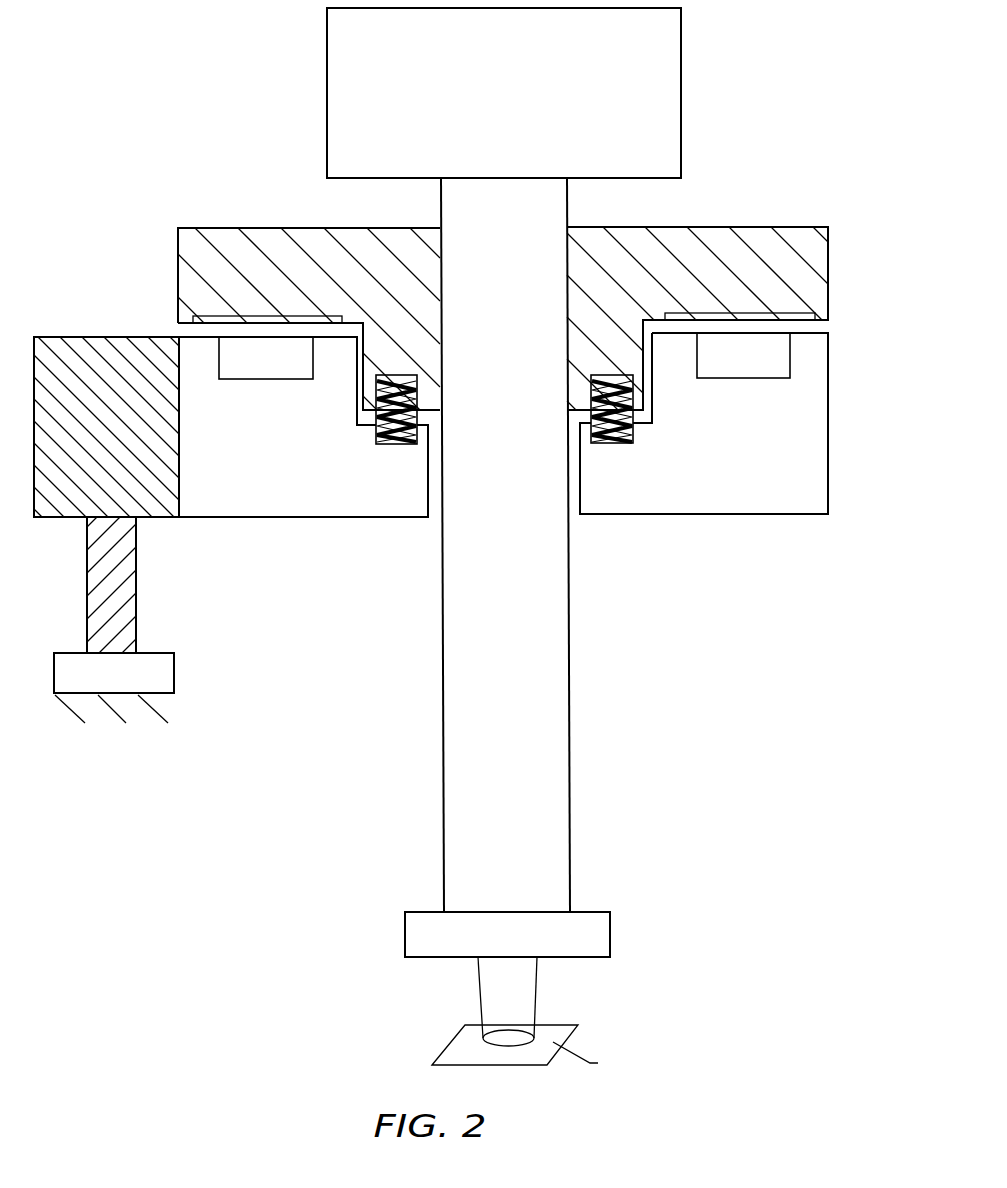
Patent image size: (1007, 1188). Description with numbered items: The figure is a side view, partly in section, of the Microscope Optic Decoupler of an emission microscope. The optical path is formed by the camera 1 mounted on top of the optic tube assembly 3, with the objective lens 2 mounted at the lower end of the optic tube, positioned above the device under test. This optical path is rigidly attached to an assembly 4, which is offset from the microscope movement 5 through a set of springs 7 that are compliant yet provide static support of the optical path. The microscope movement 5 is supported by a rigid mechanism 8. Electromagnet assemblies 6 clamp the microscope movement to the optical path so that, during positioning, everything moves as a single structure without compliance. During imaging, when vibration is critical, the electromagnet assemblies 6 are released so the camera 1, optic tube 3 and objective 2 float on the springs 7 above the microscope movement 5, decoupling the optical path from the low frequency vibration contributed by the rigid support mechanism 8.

The camera 1 is at (525, 93).
The objective lens 2 is at (537, 1016).
The optic tube assembly 3 is at (511, 567).
The assembly 4 is at (503, 295).
The microscope movement 5 is at (456, 425).
The electromagnet assemblies 6 is at (534, 344).
The springs 7 is at (501, 463).
The rigid mechanism 8 is at (111, 530).